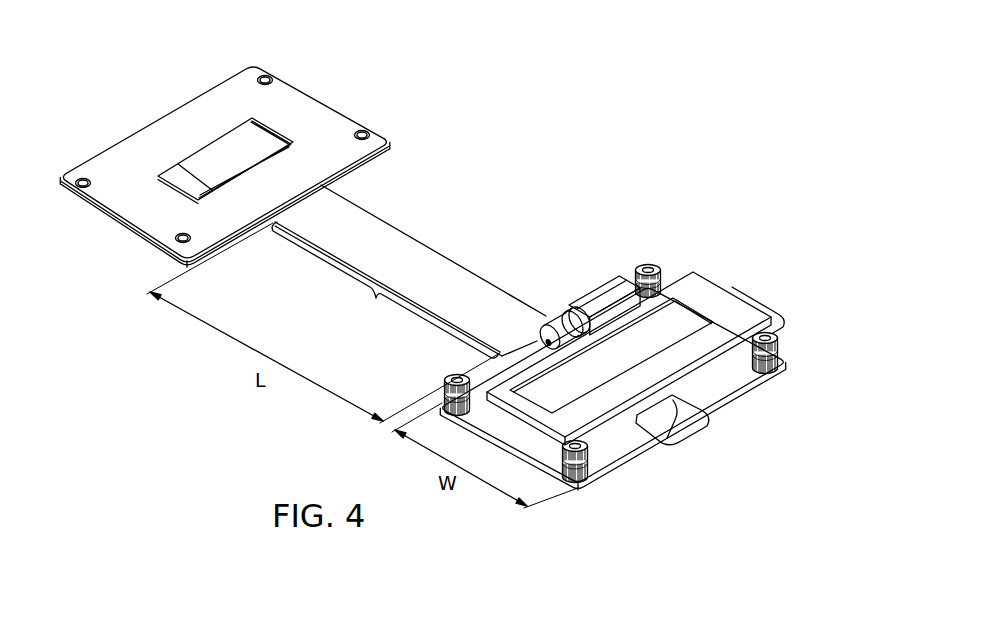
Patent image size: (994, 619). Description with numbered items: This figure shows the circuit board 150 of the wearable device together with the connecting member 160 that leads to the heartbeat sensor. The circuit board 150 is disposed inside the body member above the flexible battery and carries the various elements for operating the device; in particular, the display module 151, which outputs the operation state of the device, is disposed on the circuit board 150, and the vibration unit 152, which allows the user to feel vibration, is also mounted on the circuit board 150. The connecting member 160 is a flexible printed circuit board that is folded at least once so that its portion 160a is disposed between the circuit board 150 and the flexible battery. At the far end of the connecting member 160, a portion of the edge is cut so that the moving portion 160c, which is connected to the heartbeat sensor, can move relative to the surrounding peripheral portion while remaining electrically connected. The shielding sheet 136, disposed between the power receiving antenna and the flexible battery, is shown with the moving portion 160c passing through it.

The shielding sheet 136 is at (328, 98).
The moving portion 160c is at (237, 147).
The portion of the connecting member 160a is at (409, 271).
The connecting member 160 is at (682, 430).
The circuit board 150 is at (733, 401).
The display module 151 is at (704, 273).
The vibration unit 152 is at (582, 297).